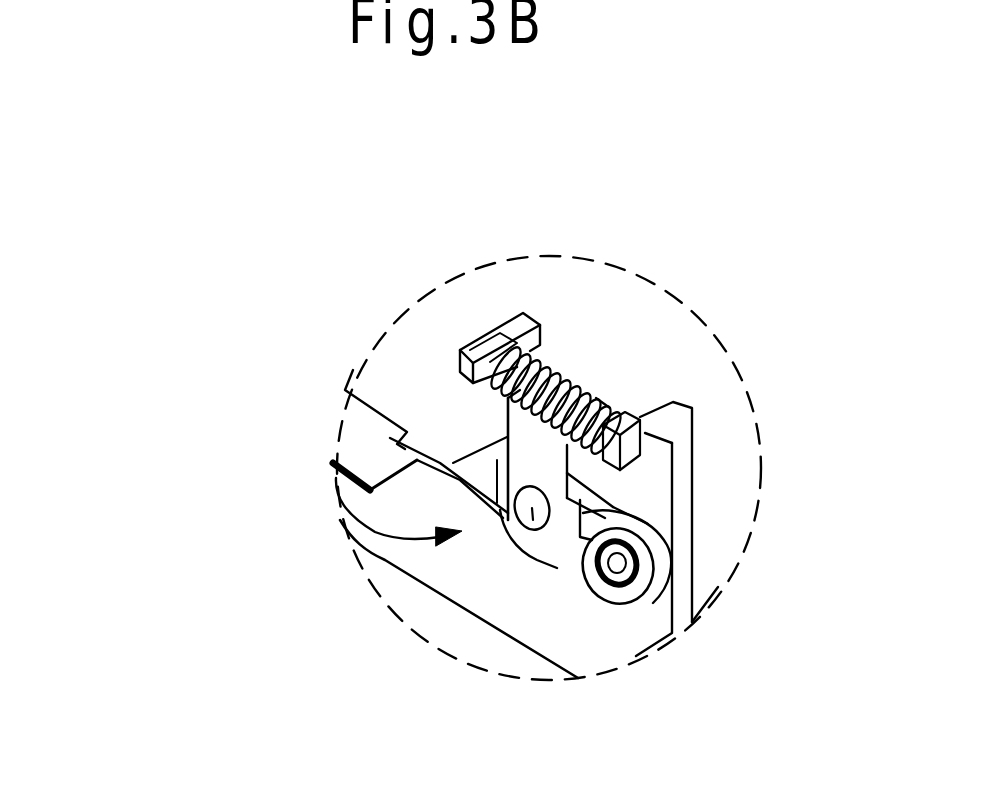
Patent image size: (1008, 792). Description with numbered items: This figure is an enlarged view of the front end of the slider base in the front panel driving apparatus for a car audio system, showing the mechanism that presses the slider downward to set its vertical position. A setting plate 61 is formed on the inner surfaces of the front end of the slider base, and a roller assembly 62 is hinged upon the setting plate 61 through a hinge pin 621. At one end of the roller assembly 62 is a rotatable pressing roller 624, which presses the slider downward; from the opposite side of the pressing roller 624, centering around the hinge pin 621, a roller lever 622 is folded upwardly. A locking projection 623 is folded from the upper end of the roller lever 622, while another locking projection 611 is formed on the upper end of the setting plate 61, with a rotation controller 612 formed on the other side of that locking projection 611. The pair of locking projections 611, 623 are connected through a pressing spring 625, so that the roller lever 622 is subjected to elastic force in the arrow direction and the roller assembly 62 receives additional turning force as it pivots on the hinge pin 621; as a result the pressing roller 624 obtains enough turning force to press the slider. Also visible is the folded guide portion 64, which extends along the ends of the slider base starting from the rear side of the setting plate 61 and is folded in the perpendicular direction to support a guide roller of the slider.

The setting plate 61 is at (703, 470).
The locking projection 611 is at (622, 405).
The rotation controller 612 is at (549, 365).
The roller assembly 62 is at (337, 493).
The hinge pin 621 is at (543, 533).
The roller lever 622 is at (507, 437).
The locking projection 623 is at (483, 321).
The pressing roller 624 is at (652, 568).
The pressing spring 625 is at (576, 380).
The guide portion 64 is at (370, 452).